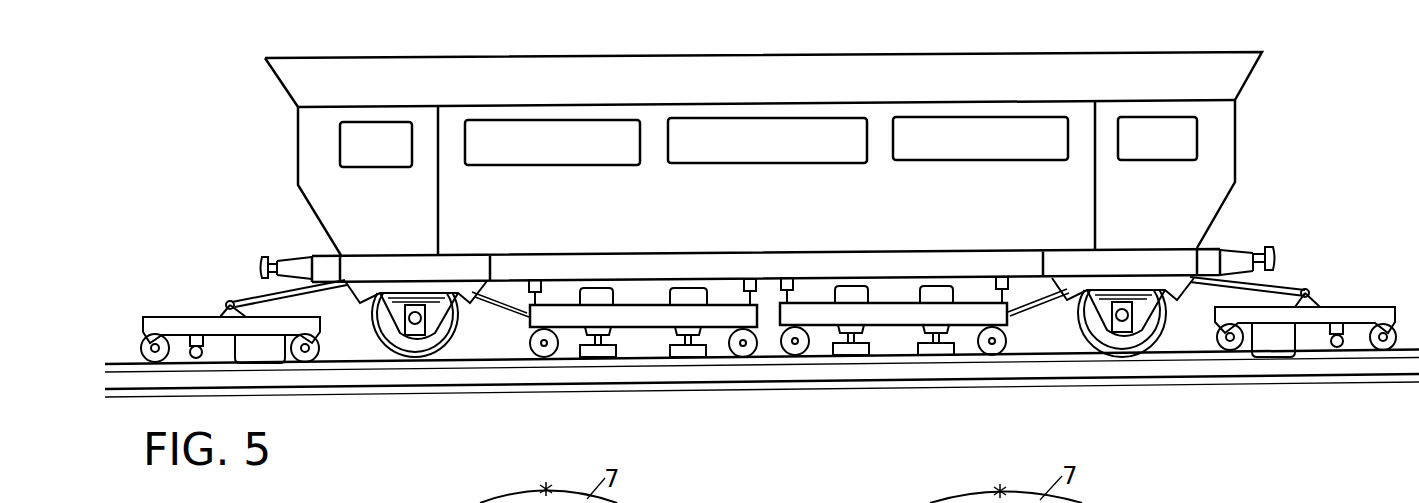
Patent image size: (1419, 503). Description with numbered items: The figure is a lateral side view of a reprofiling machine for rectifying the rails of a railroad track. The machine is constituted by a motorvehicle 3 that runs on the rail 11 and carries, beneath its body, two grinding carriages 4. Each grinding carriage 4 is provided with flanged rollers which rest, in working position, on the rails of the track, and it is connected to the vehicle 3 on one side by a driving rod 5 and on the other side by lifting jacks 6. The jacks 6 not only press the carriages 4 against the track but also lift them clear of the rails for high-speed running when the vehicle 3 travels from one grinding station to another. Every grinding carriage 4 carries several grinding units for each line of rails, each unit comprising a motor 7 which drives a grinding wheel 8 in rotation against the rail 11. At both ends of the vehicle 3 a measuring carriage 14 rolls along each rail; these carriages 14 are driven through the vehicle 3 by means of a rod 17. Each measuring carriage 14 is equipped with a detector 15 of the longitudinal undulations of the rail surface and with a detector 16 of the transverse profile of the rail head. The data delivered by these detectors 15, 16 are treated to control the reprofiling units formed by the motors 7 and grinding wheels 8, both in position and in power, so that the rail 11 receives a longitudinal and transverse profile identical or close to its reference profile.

The motorvehicle 3 is at (763, 154).
The grinding carriage 4 is at (645, 318).
The driving rod 5 is at (496, 313).
The lifting jack 6 is at (536, 278).
The motor 7 is at (594, 290).
The grinding wheel 8 is at (600, 357).
The rail 11 is at (498, 368).
The measuring carriage 14 is at (178, 316).
The detector of the longitudinal undulations of the rail 15 is at (194, 335).
The detector of the transverse profile of the rail 16 is at (258, 347).
The rod 17 is at (257, 298).